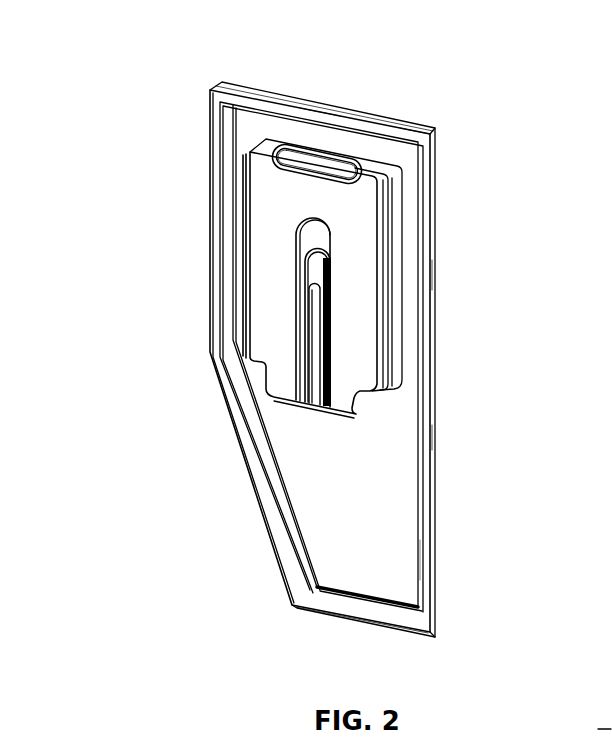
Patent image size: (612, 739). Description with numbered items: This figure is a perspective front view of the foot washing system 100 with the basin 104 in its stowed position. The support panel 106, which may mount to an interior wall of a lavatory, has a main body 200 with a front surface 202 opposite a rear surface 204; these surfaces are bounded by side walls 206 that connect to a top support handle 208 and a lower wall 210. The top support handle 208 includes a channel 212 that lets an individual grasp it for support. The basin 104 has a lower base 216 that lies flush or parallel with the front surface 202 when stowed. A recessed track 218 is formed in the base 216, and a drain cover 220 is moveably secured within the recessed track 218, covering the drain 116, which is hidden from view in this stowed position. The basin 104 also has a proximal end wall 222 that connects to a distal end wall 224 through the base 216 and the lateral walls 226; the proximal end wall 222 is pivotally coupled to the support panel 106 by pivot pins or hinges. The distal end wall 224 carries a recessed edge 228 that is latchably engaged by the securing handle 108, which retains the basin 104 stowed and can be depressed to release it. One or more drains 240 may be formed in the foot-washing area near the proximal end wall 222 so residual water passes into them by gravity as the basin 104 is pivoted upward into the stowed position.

The foot washing system 100 is at (140, 76).
The basin 104 is at (376, 347).
The support panel 106 is at (438, 275).
The securing handle 108 is at (327, 158).
The drain 116 is at (304, 250).
The main body 200 is at (438, 505).
The front surface 202 is at (403, 558).
The rear surface 204 is at (442, 438).
The side walls 206 is at (226, 204).
The top support handle 208 is at (393, 127).
The lower wall 210 is at (345, 612).
The channel 212 is at (440, 143).
The lower base 216 is at (385, 330).
The recessed track 218 is at (297, 240).
The drain cover 220 is at (312, 284).
The proximal end wall 222 is at (330, 412).
The distal end wall 224 is at (413, 137).
The lateral walls 226 is at (248, 180).
The recessed edge 228 is at (270, 142).
The drains 240 is at (579, 727).